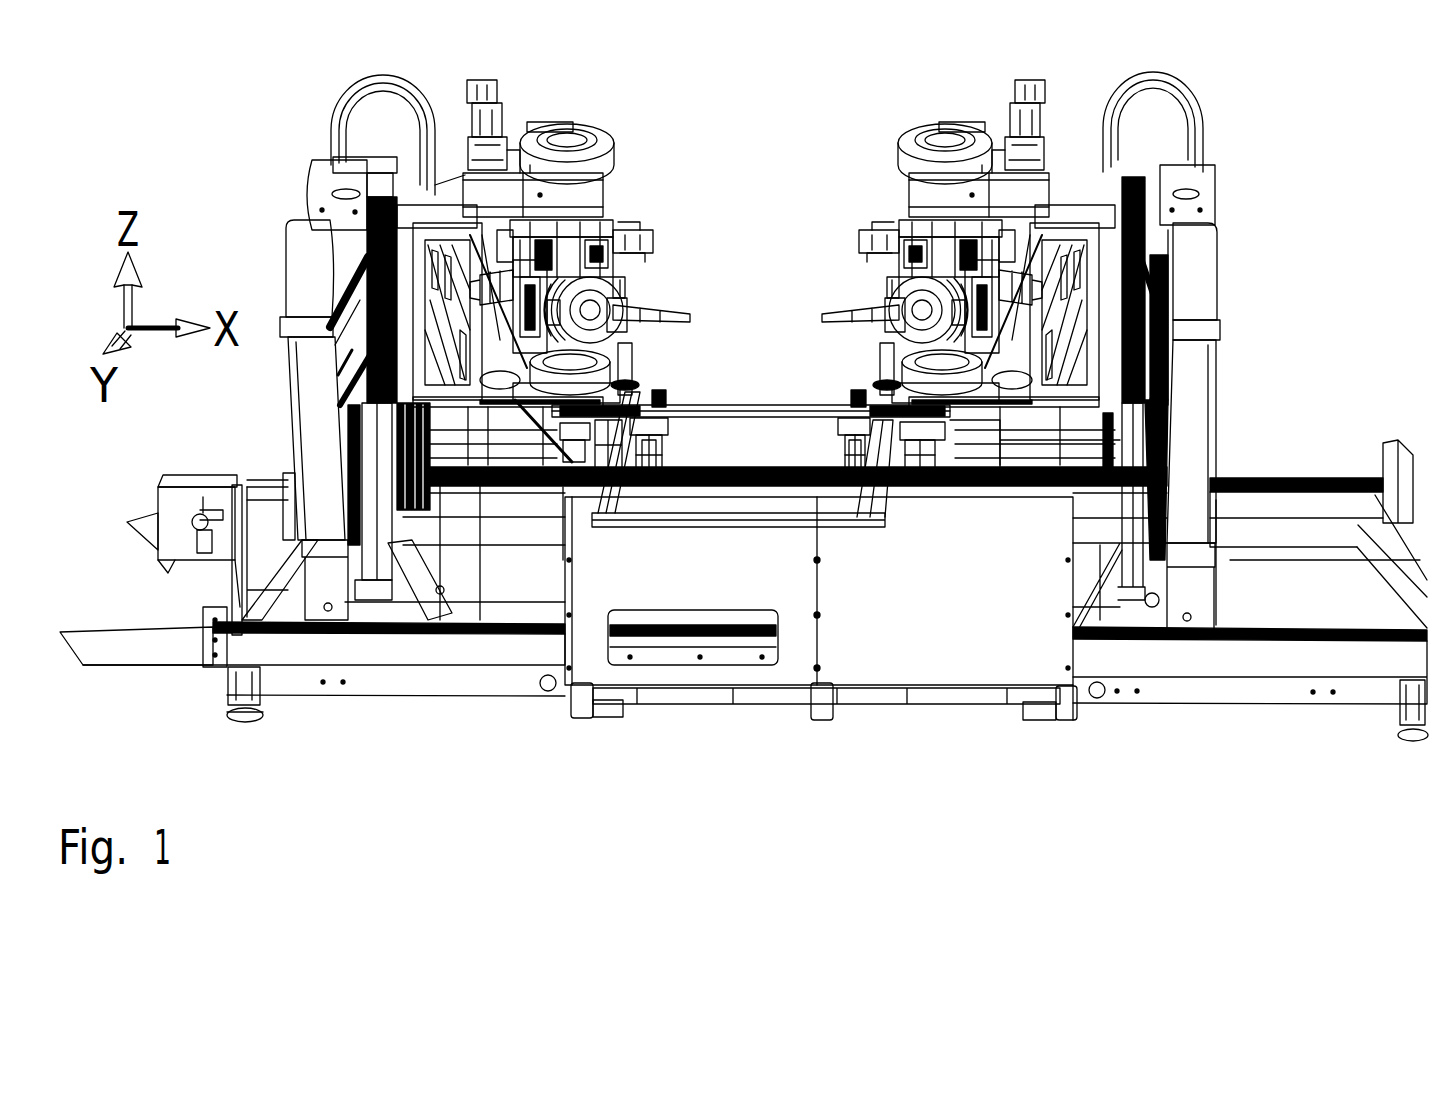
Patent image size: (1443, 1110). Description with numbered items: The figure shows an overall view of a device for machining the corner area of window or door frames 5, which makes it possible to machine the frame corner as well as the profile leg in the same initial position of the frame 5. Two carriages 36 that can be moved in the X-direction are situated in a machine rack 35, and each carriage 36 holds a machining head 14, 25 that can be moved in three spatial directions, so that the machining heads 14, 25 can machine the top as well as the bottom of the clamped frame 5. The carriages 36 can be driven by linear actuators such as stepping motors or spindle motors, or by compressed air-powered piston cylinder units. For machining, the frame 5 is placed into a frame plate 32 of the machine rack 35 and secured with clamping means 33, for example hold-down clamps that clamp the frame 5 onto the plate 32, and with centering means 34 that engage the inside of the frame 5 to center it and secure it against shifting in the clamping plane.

The carriage 36 is at (272, 190).
The machining head 14 is at (613, 212).
The machining head 25 is at (908, 213).
The clamping means 33 is at (862, 383).
The centering means 34 is at (838, 405).
The frame plate 32 is at (568, 457).
The frame 5 is at (666, 528).
The machine rack 35 is at (908, 722).